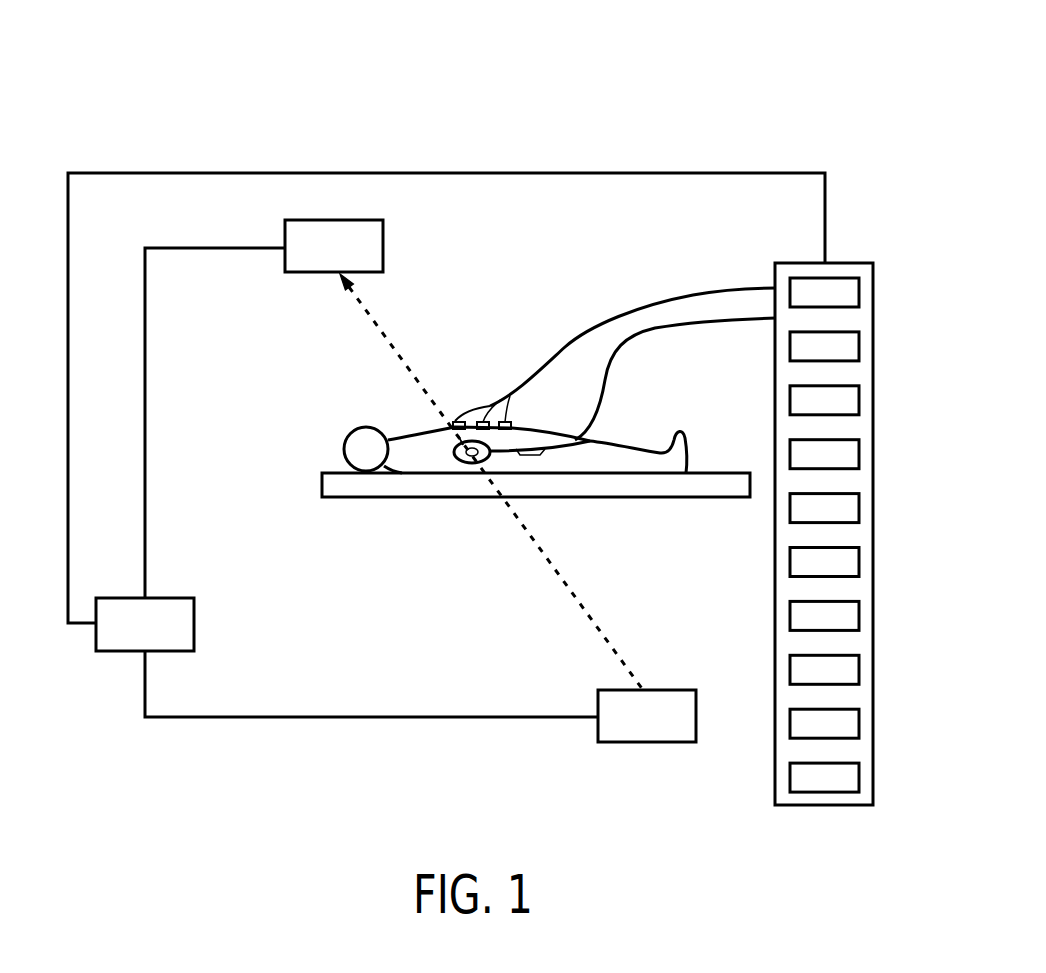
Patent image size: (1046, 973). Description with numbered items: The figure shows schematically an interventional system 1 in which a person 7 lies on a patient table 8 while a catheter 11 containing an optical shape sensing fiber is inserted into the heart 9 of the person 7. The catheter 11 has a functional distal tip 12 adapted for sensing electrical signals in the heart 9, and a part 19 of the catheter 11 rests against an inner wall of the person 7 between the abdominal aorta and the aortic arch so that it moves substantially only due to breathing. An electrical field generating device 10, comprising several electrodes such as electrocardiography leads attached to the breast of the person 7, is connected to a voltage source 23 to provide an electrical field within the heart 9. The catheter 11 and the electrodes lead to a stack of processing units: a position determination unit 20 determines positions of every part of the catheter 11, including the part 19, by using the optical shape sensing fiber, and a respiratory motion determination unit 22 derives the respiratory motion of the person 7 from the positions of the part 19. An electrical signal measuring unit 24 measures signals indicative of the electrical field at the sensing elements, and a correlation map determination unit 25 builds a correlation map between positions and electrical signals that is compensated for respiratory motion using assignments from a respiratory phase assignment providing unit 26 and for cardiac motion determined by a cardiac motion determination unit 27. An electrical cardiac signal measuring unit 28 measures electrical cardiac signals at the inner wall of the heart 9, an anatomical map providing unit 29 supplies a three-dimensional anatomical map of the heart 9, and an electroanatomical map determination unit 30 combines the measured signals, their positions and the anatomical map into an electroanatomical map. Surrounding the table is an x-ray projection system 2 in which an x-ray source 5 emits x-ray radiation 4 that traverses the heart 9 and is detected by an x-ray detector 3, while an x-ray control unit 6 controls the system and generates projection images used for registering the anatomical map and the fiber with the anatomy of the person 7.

The interventional system 1 is at (390, 100).
The x-ray projection system 2 is at (138, 812).
The x-ray detector 3 is at (383, 242).
The x-ray radiation 4 is at (399, 352).
The x-ray source 5 is at (656, 742).
The x-ray control unit 6 is at (113, 651).
The person 7 is at (636, 447).
The patient table 8 is at (716, 497).
The heart 9 is at (453, 462).
The electrical field generating device 10 is at (543, 400).
The catheter 11 is at (674, 330).
The functional distal tip 12 is at (508, 472).
The part of the catheter 19 is at (522, 456).
The position determination unit 20 is at (859, 292).
The respiratory motion determination unit 22 is at (859, 346).
The voltage source 23 is at (859, 400).
The electrical signal measuring unit 24 is at (859, 454).
The correlation map determination unit 25 is at (859, 508).
The respiratory phase assignment providing unit 26 is at (859, 562).
The cardiac motion determination unit 27 is at (859, 616).
The electrical cardiac signal measuring unit 28 is at (859, 670).
The anatomical map providing unit 29 is at (859, 724).
The electroanatomical map determination unit 30 is at (859, 778).